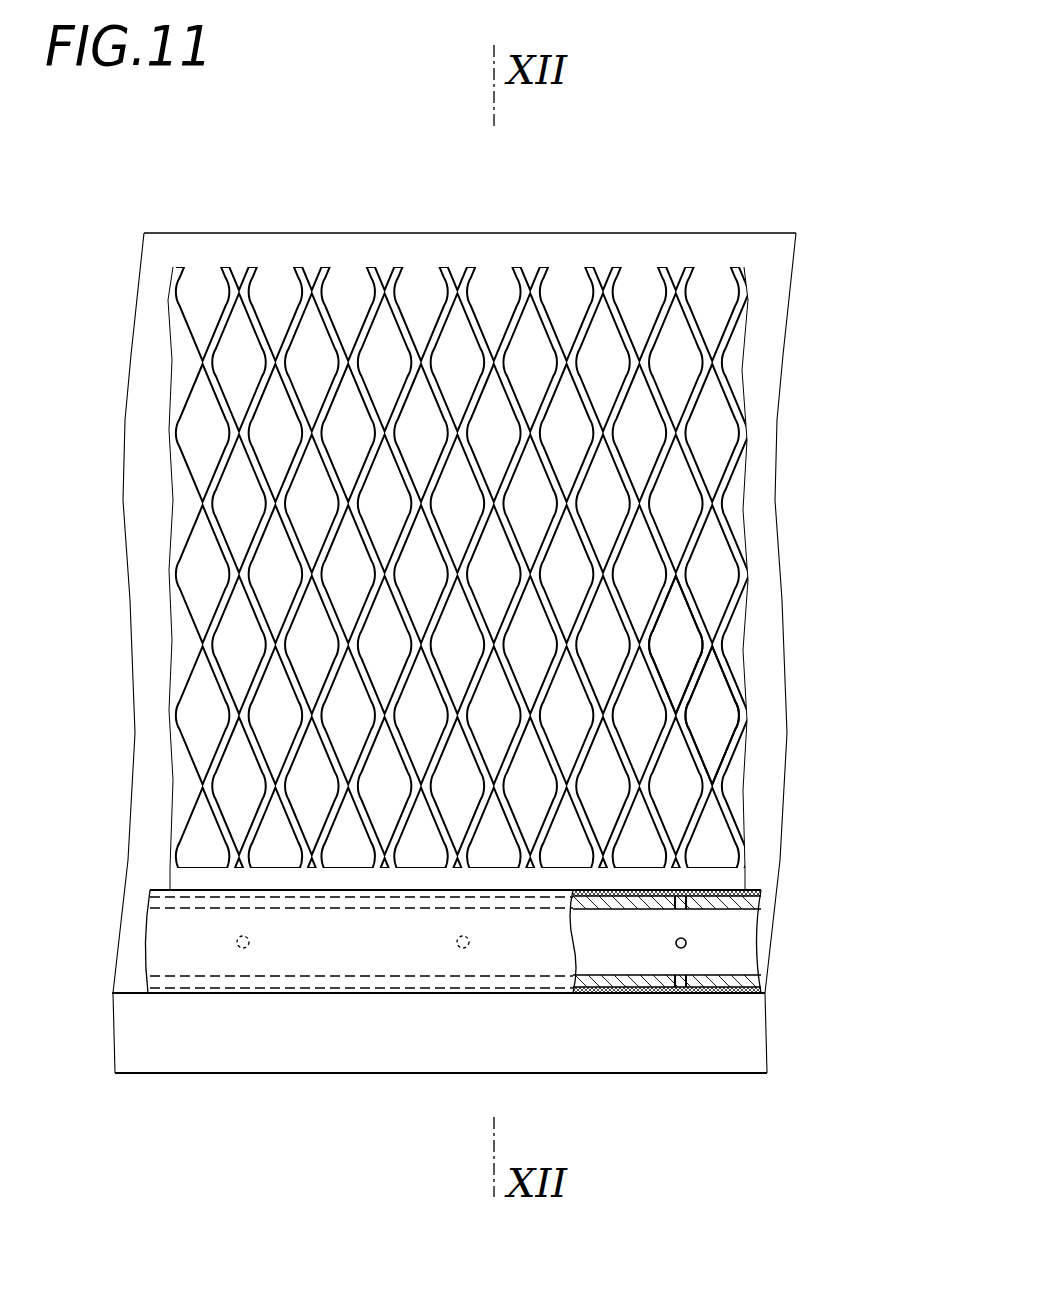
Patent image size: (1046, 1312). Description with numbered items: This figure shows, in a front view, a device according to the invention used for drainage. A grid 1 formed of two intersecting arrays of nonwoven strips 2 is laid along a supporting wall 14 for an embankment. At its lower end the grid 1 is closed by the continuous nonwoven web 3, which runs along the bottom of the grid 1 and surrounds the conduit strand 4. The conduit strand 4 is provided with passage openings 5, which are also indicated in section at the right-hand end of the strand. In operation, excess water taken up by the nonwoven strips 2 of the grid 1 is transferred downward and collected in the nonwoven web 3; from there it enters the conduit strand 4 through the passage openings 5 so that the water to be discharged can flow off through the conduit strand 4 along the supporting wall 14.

The grid 1 is at (534, 574).
The nonwoven strips 2 is at (655, 815).
The nonwoven web 3 is at (367, 942).
The conduit strand 4 is at (721, 952).
The passage openings 5 is at (684, 984).
The supporting wall 14 is at (147, 517).